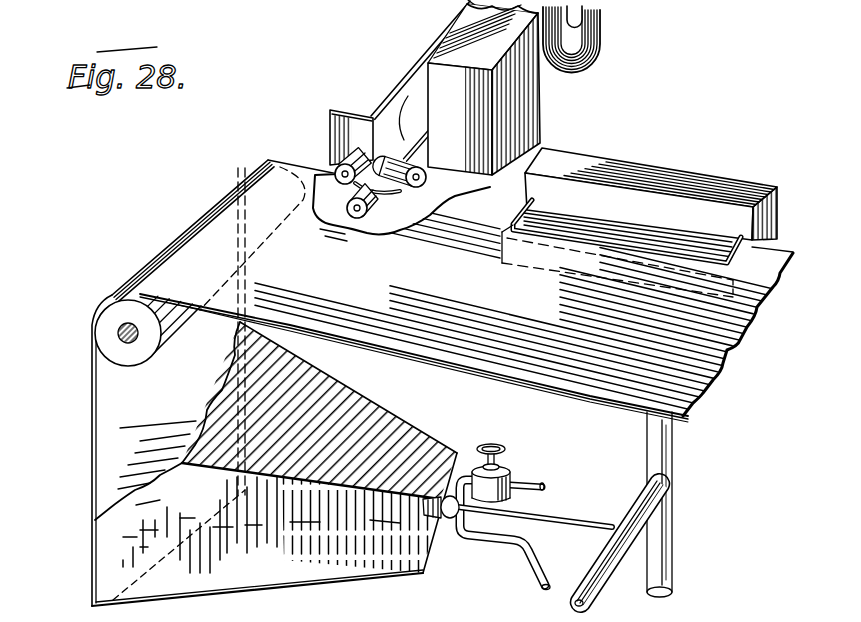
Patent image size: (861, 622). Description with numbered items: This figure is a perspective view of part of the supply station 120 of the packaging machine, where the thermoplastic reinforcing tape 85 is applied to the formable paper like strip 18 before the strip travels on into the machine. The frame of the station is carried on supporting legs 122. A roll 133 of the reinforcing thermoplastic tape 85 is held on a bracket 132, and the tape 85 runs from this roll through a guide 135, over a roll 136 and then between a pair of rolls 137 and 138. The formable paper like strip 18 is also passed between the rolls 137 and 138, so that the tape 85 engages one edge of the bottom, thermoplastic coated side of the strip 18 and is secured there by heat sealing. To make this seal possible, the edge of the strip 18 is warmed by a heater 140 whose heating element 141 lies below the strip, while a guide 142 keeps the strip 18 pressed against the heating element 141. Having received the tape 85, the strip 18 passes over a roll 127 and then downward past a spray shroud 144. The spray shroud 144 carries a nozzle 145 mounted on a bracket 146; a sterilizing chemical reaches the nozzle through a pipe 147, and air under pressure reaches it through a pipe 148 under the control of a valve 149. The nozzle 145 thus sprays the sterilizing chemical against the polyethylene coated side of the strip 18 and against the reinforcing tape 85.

The formable paper like strip 18 is at (695, 371).
The thermoplastic reinforcing tape 85 is at (462, 137).
The supply station 120 is at (642, 223).
The supporting legs 122 is at (667, 542).
The roll 127 is at (100, 338).
The bracket 132 is at (418, 66).
The roll of reinforcing thermoplastic tape 133 is at (590, 58).
The guide 135 is at (533, 94).
The roll 136 is at (403, 105).
The roll 137 is at (375, 207).
The roll 138 is at (347, 160).
The heater 140 is at (623, 170).
The heating element 141 is at (650, 280).
The guide 142 is at (665, 252).
The spray shroud 144 is at (375, 614).
The nozzle 145 is at (405, 536).
The bracket 146 is at (572, 523).
The pipe 147 is at (522, 553).
The pipe 148 is at (523, 480).
The valve 149 is at (505, 463).